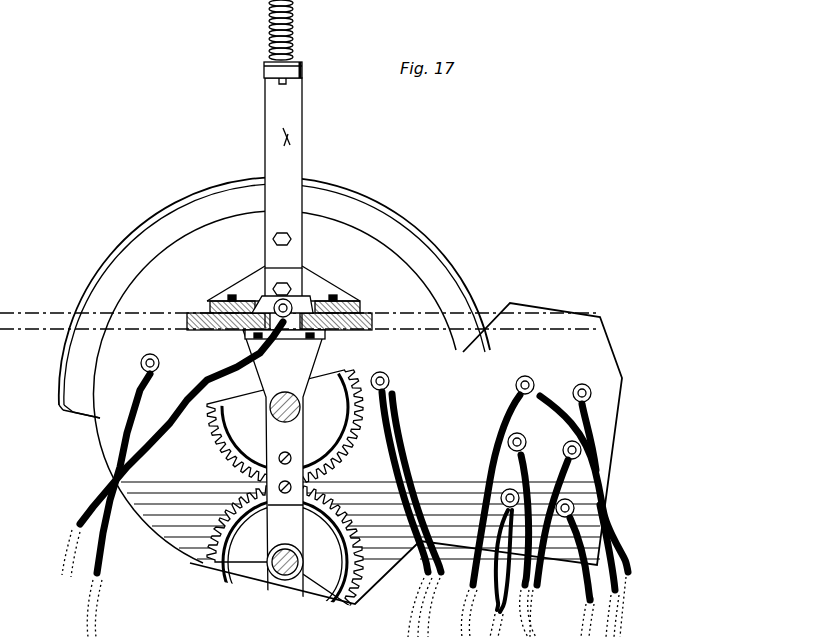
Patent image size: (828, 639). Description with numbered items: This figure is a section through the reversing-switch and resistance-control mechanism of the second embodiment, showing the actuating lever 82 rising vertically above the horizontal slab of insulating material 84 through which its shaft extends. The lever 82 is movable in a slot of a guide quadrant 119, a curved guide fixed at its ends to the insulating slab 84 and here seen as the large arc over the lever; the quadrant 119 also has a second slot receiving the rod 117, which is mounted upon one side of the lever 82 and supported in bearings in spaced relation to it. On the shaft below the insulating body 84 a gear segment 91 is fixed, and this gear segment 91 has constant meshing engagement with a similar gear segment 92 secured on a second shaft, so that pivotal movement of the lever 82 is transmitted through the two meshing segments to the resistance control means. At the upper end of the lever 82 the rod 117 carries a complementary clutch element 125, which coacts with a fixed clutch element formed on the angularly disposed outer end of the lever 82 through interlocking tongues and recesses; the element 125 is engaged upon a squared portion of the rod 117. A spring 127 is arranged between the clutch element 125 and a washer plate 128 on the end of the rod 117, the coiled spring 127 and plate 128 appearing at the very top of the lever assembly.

The actuating lever 82 is at (300, 138).
The insulating slab 84 is at (153, 272).
The gear segment 91 is at (217, 432).
The gear segment 92 is at (246, 511).
The rod 117 is at (276, 50).
The guide quadrant 119 is at (436, 241).
The clutch element 125 is at (266, 72).
The spring 127 is at (277, 24).
The washer plate 128 is at (270, 3).